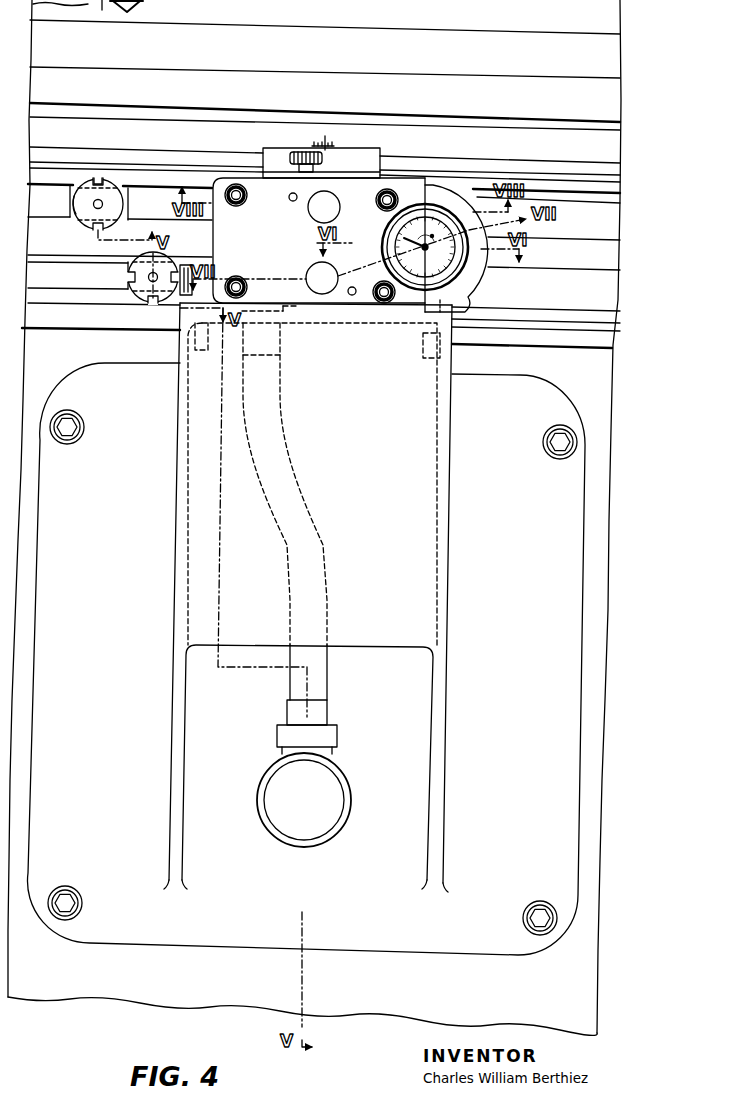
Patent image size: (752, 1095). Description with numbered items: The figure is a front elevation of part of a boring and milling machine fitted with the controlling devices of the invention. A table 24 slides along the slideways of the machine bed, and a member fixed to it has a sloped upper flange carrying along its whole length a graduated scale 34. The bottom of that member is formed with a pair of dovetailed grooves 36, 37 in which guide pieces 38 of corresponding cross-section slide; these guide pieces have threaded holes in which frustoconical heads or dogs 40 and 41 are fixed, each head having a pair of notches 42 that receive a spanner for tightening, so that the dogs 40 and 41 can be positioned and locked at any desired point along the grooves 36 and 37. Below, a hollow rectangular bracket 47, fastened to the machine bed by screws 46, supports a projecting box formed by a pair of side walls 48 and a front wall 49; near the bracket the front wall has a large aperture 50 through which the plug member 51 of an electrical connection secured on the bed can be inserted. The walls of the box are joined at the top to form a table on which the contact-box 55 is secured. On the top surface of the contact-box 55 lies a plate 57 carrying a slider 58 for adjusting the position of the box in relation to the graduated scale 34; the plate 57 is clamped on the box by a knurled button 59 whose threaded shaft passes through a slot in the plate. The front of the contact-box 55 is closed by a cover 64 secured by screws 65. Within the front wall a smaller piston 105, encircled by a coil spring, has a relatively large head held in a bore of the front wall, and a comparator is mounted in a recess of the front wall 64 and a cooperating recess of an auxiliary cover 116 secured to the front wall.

The table 24 is at (530, 125).
The graduated scale 34 is at (348, 133).
The dovetailed groove 36 is at (55, 206).
The dovetailed groove 37 is at (48, 294).
The guide piece 38 is at (78, 187).
The frustoconical head or dog 40 is at (83, 211).
The frustoconical head or dog 41 is at (143, 284).
The notch 42 is at (100, 182).
The screw 46 is at (567, 438).
The hollow rectangular bracket 47 is at (580, 512).
The side wall 48 is at (438, 743).
The front wall 49 is at (420, 588).
The aperture 50 is at (413, 698).
The plug member 51 is at (330, 797).
The contact-box 55 is at (256, 192).
The plate 57 is at (380, 168).
The slider 58 is at (382, 157).
The knurled button 59 is at (303, 150).
The cover 64 is at (303, 298).
The screw 65 is at (382, 302).
The smaller piston 105 is at (316, 268).
The auxiliary cover 116 is at (470, 286).